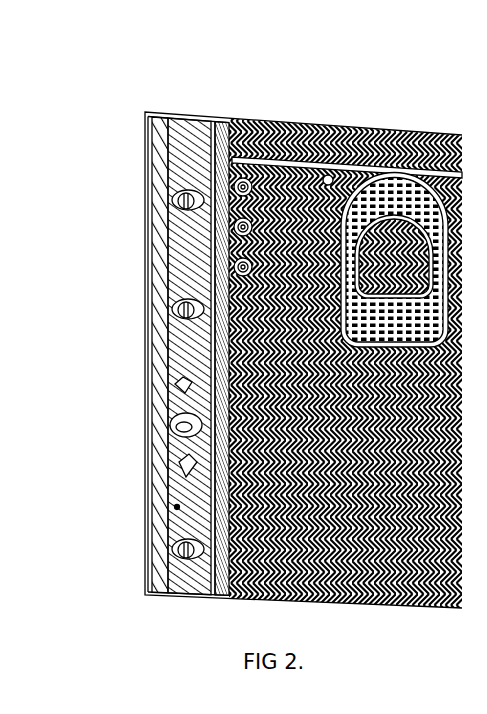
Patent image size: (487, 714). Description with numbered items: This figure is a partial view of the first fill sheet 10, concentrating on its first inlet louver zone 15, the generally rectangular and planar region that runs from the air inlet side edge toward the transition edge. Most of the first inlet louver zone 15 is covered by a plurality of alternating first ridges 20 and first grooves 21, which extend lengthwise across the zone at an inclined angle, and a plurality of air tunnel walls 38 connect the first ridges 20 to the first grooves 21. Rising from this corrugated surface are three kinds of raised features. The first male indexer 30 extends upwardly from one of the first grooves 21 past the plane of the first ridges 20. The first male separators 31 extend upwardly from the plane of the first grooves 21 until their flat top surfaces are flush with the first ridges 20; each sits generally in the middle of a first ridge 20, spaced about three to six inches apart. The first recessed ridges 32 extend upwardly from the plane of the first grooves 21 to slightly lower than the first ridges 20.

The first fill sheet 10 is at (252, 319).
The first inlet louver zone 15 is at (178, 270).
The first ridges 20 is at (177, 511).
The first grooves 21 is at (167, 503).
The first male indexer 30 is at (175, 428).
The first male separators 31 is at (184, 198).
The first recessed ridges 32 is at (180, 393).
The air tunnel walls 38 is at (175, 508).